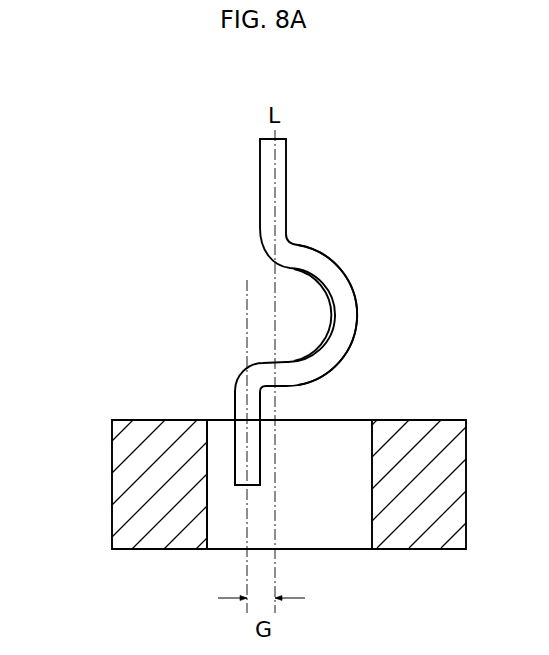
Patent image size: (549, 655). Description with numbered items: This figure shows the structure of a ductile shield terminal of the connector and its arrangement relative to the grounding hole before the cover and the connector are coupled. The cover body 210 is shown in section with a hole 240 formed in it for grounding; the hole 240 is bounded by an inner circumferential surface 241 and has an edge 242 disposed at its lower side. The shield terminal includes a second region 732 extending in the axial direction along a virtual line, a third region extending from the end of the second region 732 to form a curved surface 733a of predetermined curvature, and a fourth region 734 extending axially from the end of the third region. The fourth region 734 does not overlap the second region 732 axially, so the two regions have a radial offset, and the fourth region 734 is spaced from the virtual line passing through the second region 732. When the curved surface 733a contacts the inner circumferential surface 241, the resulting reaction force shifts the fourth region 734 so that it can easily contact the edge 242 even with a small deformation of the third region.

The cover body 210 is at (130, 488).
The hole 240 is at (335, 480).
The inner circumferential surface 241 is at (210, 440).
The edge 242 is at (212, 552).
The second region 732 is at (287, 183).
The curved surface 733a is at (358, 310).
The fourth region 734 is at (260, 410).